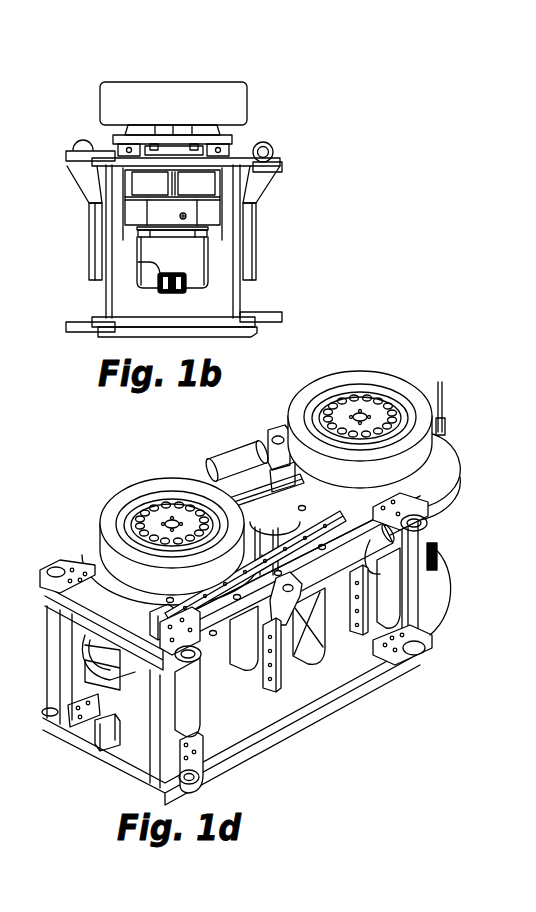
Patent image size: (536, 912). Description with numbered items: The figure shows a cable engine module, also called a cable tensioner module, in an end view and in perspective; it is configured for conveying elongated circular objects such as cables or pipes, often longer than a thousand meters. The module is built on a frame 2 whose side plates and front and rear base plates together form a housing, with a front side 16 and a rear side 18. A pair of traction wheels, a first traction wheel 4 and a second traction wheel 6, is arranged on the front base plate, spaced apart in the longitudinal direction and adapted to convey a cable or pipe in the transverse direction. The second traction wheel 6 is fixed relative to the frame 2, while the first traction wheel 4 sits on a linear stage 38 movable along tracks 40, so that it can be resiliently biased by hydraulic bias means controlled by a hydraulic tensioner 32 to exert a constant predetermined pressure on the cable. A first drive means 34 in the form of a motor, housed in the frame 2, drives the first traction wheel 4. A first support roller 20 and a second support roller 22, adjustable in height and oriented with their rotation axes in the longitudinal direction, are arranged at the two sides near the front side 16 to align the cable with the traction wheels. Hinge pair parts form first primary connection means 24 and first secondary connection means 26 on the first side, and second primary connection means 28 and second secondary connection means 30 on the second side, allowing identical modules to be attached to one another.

In FIG. 1B, the frame 2 is at (100, 301).
In FIG. 1B, the first traction wheel 4 is at (138, 88).
In FIG. 1D, the first traction wheel 4 is at (135, 492).
In FIG. 1B, the second traction wheel 6 is at (3, 206).
In FIG. 1D, the second traction wheel 6 is at (350, 385).
In FIG. 1D, the front side 16 is at (455, 452).
In FIG. 1D, the rear side 18 is at (440, 640).
In FIG. 1B, the first support roller 20 is at (85, 142).
In FIG. 1D, the first support roller 20 is at (230, 478).
In FIG. 1B, the second support roller 22 is at (272, 147).
In FIG. 1D, the second support roller 22 is at (330, 570).
In FIG. 1D, the first primary connection means 24 is at (42, 720).
In FIG. 1D, the first secondary connection means 26 is at (275, 440).
In FIG. 1D, the second primary connection means 28 is at (210, 776).
In FIG. 1D, the second secondary connection means 30 is at (434, 548).
In FIG. 1D, the hydraulic tensioner 32 is at (446, 428).
In FIG. 1D, the first drive means 34 is at (98, 672).
In FIG. 1D, the linear stage 38 is at (210, 632).
In FIG. 1D, the tracks 40 is at (440, 500).